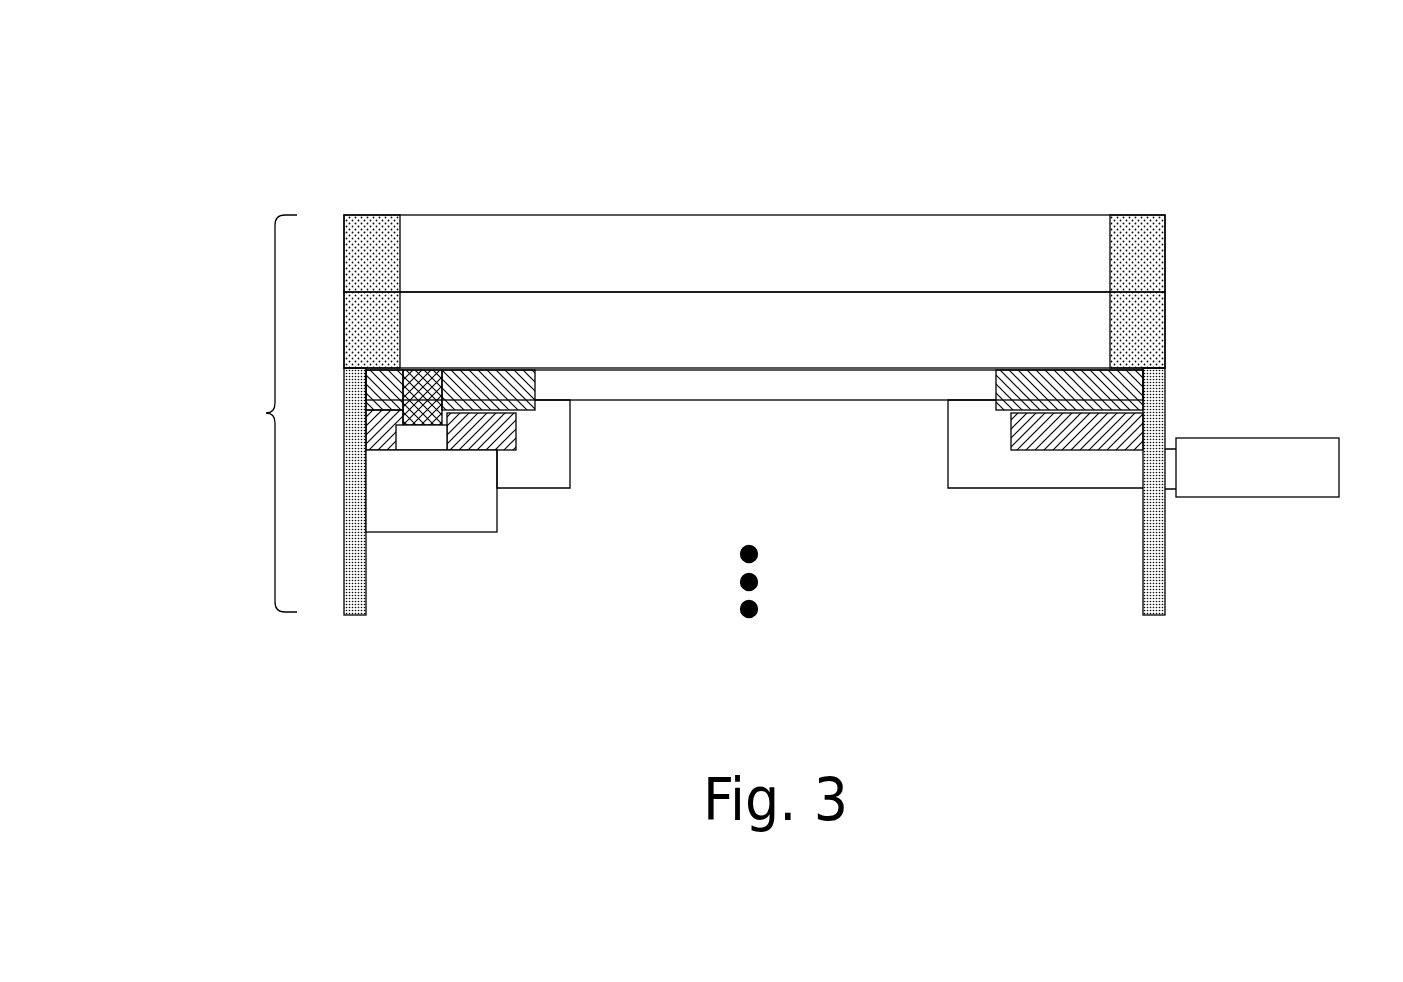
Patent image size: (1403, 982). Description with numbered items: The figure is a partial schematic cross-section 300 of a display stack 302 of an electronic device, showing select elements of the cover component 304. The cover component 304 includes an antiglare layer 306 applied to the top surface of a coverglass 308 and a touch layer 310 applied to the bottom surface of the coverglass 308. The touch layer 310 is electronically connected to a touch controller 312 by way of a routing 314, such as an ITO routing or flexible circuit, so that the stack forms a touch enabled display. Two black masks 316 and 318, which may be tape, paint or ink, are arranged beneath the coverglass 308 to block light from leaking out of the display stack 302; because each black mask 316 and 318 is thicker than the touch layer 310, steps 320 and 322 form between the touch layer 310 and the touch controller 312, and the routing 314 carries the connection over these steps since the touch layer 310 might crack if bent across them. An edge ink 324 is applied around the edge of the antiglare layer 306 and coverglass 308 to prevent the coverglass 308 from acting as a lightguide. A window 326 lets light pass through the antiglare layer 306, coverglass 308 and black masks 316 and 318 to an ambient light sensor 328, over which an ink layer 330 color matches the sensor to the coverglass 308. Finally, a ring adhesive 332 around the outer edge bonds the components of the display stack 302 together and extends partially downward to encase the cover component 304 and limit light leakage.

The partial schematic cross-section 300 is at (1216, 99).
The display stack 302 is at (456, 166).
The cover component 304 is at (230, 413).
The antiglare layer 306 is at (754, 253).
The coverglass 308 is at (754, 330).
The touch layer 310 is at (754, 385).
The touch controller 312 is at (1252, 467).
The routing 314 is at (820, 444).
The black mask 316 is at (792, 390).
The black mask 318 is at (795, 431).
The step 320 is at (974, 412).
The step 322 is at (999, 422).
The edge ink 324 is at (754, 291).
The window 326 is at (422, 370).
The ambient light sensor 328 is at (431, 491).
The ink layer 330 is at (421, 437).
The ring adhesive 332 is at (344, 614).